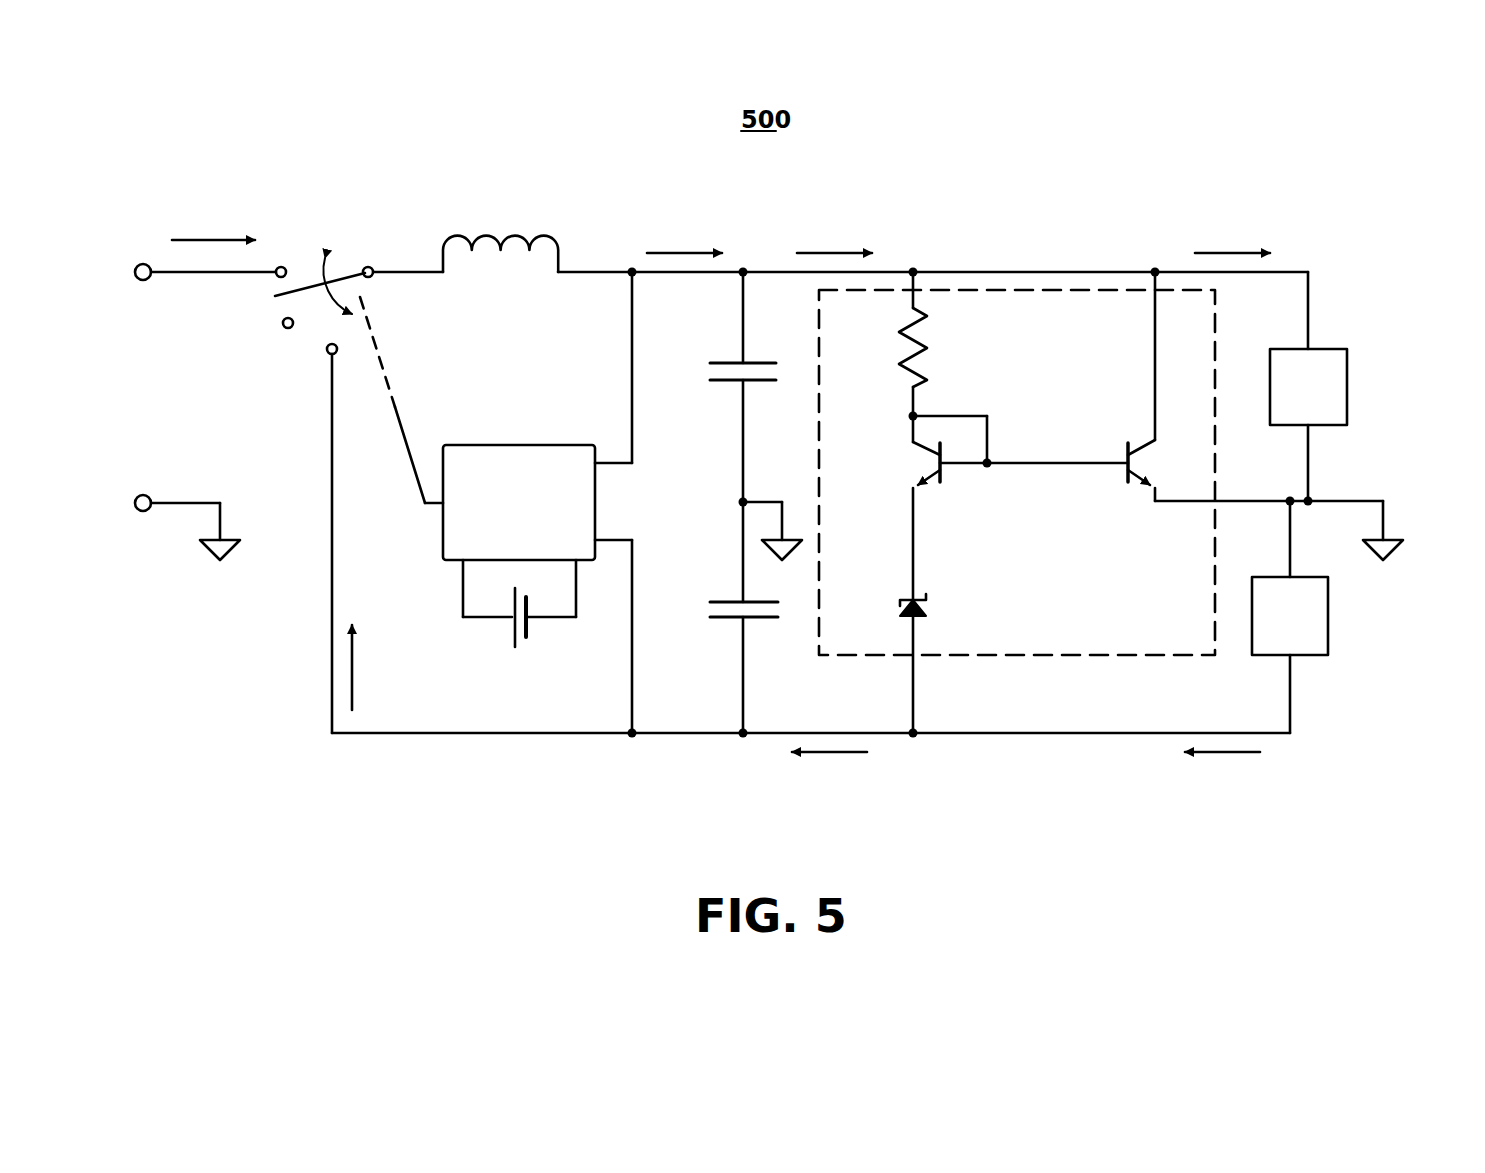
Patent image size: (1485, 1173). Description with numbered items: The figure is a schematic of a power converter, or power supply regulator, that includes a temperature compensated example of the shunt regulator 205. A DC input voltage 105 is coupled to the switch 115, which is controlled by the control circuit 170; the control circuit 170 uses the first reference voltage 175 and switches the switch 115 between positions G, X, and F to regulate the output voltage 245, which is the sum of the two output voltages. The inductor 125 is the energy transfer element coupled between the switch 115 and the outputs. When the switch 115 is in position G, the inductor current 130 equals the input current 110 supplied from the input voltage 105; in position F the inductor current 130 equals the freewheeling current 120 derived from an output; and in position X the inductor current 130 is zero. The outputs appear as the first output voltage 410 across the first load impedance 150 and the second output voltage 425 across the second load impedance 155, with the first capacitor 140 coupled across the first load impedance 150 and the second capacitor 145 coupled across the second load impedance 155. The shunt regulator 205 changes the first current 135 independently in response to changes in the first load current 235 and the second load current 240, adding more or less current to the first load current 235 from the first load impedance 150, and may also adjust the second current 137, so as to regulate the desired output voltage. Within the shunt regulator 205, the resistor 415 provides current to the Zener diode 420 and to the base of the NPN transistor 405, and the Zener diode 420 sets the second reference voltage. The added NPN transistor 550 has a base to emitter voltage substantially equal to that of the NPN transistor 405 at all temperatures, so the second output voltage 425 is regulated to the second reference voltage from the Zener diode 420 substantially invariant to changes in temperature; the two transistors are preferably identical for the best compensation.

The input current IG 110 is at (188, 222).
The switch S1 115 is at (347, 228).
The inductor L1 125 is at (502, 225).
The inductor current IL 130 is at (707, 233).
The current I1 135 is at (840, 233).
The load current IZ1 235 is at (1235, 233).
The capacitor C1 140 is at (725, 352).
The capacitor C2 145 is at (725, 635).
The control circuit 170 is at (503, 440).
The reference voltage VREF1 175 is at (497, 623).
The output voltage VO 245 is at (658, 483).
The freewheeling current IF 120 is at (365, 655).
The DC input voltage VG 105 is at (158, 368).
The current I2 137 is at (818, 768).
The load current IZ2 240 is at (1220, 770).
The shunt regulator 205 is at (1090, 660).
The resistor R1 415 is at (890, 338).
The NPN transistor 550 is at (908, 465).
The NPN transistor 405 is at (1115, 447).
The Zener diode 420 is at (905, 592).
The load impedance Z1 150 is at (1298, 338).
The load impedance Z2 155 is at (1310, 665).
The output voltage VO1 410 is at (1383, 370).
The output voltage VO2 425 is at (1368, 595).